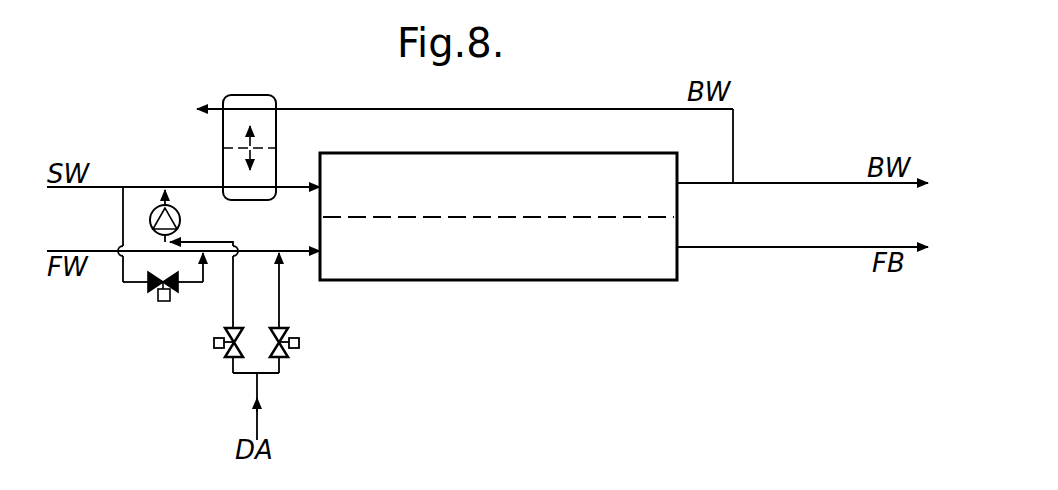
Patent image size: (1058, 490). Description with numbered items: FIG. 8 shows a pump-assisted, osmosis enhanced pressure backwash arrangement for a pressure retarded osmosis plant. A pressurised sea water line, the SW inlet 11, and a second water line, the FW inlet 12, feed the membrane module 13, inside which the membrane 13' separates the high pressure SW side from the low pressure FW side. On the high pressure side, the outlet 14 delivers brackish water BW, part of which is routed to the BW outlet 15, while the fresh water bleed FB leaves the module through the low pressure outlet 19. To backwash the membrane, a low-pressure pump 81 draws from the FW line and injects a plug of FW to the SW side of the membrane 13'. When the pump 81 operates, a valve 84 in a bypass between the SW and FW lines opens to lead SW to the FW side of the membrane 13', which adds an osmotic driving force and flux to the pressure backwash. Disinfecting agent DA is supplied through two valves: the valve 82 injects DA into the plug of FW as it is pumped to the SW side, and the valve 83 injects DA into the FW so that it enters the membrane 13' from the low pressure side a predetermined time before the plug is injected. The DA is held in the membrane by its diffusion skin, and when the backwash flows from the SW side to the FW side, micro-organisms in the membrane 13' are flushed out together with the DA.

The SW inlet 11 is at (104, 187).
The FW inlet 12 is at (104, 251).
The membrane module 13 is at (498, 199).
The membrane 13' is at (498, 277).
The outlet 14 is at (710, 184).
The BW outlet 15 is at (215, 109).
The low pressure outlet 19 is at (713, 248).
The low-pressure pump 81 is at (153, 207).
The valve 82 is at (219, 347).
The valve 83 is at (299, 345).
The valve 84 is at (151, 291).